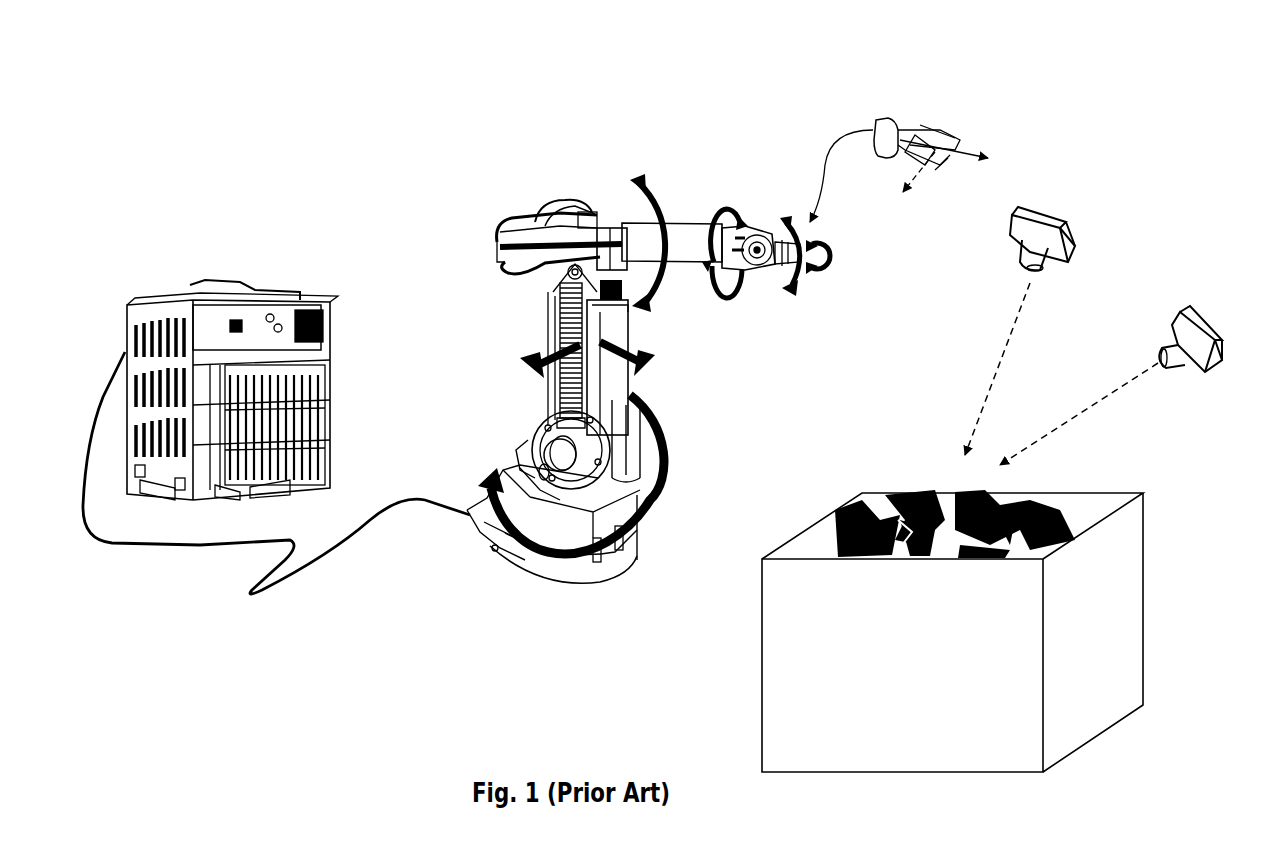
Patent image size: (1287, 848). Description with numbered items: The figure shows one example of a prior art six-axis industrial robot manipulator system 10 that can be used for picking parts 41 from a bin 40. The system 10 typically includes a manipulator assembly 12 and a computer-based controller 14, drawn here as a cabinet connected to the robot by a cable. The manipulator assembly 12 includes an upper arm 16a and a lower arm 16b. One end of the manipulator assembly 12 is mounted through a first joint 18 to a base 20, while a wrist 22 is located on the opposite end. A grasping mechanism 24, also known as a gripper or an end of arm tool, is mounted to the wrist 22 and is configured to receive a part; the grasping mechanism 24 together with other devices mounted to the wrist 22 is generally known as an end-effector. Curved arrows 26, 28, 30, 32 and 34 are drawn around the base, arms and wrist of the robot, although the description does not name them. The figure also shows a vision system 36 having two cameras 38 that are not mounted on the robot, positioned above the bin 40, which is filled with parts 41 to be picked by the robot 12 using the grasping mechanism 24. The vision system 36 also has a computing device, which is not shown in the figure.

The industrial robot manipulator system 10 is at (482, 92).
The manipulator assembly 12 is at (480, 228).
The computer-based controller 14 is at (178, 291).
The upper arm 16a is at (686, 252).
The lower arm 16b is at (626, 388).
The first joint 18 is at (650, 487).
The base 20 is at (600, 573).
The wrist 22 is at (757, 238).
The grasping mechanism 24 is at (928, 152).
The base rotation axis arrow 26 is at (512, 373).
The arm bend axis arrow 28 is at (643, 172).
The upper arm rotation axis arrow 30 is at (720, 226).
The wrist bend axis arrow 32 is at (800, 281).
The gripper rotation axis arrow 34 is at (838, 258).
The vision system 36 is at (1145, 217).
The cameras 38 is at (1054, 210).
The bin 40 is at (786, 694).
The parts 41 is at (1068, 500).